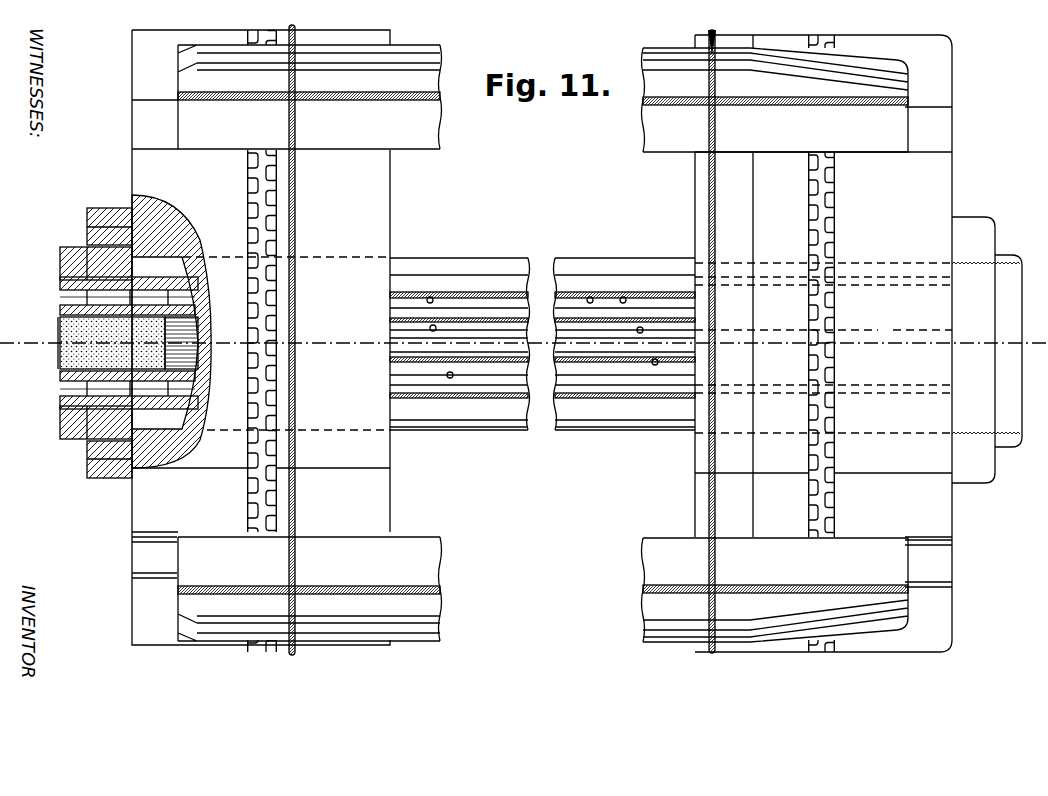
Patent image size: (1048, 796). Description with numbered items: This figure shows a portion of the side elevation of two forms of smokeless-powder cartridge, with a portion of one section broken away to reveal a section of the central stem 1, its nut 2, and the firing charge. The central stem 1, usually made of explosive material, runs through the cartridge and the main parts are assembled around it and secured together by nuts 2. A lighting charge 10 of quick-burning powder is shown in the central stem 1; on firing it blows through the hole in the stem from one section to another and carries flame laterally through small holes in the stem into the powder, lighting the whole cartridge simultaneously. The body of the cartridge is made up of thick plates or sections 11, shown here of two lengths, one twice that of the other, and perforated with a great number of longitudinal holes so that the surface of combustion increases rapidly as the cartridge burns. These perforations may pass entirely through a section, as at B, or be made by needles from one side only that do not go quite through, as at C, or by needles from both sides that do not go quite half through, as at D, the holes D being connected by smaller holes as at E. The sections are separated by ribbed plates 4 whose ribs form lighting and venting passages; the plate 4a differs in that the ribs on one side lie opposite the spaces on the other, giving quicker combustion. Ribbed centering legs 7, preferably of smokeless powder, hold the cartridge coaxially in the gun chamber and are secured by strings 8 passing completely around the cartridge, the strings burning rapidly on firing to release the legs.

The central stem 1 is at (452, 258).
The nut 2 is at (80, 441).
The ribbed plate 4 is at (820, 647).
The ribbed plate 4a is at (263, 646).
The centering leg 7 is at (441, 574).
The string 8 is at (296, 118).
The lighting charge 10 is at (58, 352).
The thick perforated section 11 is at (132, 547).
The through perforation B is at (908, 300).
The one-side perforation C is at (773, 312).
The two-side perforation D is at (914, 376).
The connecting hole E is at (890, 405).